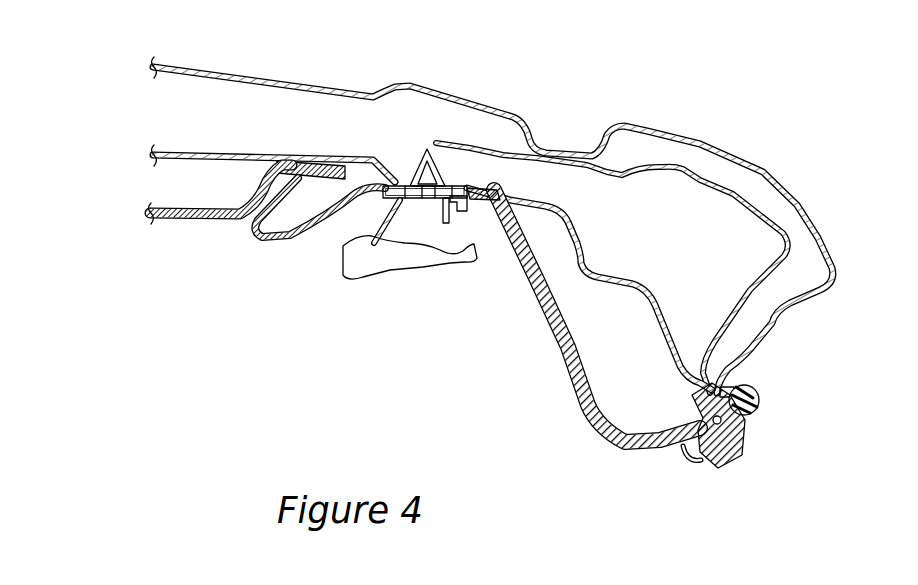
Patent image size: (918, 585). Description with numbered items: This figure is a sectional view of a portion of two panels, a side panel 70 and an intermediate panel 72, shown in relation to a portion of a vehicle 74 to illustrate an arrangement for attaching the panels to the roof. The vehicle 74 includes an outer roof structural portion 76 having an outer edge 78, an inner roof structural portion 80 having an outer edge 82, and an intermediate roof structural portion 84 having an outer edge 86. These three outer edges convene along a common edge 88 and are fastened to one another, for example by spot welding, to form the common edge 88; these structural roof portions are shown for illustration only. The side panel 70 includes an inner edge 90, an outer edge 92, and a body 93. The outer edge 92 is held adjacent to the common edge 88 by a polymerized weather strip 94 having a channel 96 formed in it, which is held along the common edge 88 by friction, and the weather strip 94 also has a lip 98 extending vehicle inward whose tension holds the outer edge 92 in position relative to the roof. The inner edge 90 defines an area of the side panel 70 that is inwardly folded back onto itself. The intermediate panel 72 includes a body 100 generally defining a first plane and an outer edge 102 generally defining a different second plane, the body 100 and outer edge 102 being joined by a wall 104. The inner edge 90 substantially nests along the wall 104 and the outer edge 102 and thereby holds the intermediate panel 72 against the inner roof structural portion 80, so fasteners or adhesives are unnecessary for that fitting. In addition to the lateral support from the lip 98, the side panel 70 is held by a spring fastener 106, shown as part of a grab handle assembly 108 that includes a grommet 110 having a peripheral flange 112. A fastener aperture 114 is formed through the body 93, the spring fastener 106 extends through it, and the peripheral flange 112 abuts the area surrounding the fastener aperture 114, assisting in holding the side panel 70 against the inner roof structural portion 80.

The side panel 70 is at (577, 398).
The intermediate panel 72 is at (190, 223).
The vehicle 74 is at (568, 124).
The outer roof structural portion 76 is at (723, 148).
The outer edge of outer roof structural portion 78 is at (727, 387).
The inner roof structural portion 80 is at (313, 153).
The outer edge of inner roof structural portion 82 is at (700, 390).
The intermediate roof structural portion 84 is at (760, 217).
The outer edge of intermediate roof structural portion 86 is at (753, 420).
The common edge 88 is at (722, 403).
The inner edge of side panel 90 is at (255, 238).
The outer edge of side panel 92 is at (653, 449).
The body of side panel 93 is at (487, 200).
The weather strip 94 is at (737, 437).
The channel 96 is at (723, 443).
The lip 98 is at (688, 462).
The body of intermediate panel 100 is at (160, 222).
The outer edge of intermediate panel 102 is at (287, 170).
The wall 104 is at (252, 208).
The spring fastener 106 is at (413, 176).
The grab handle assembly 108 is at (372, 264).
The grommet 110 is at (385, 201).
The peripheral flange 112 is at (473, 246).
The fastener aperture 114 is at (448, 186).